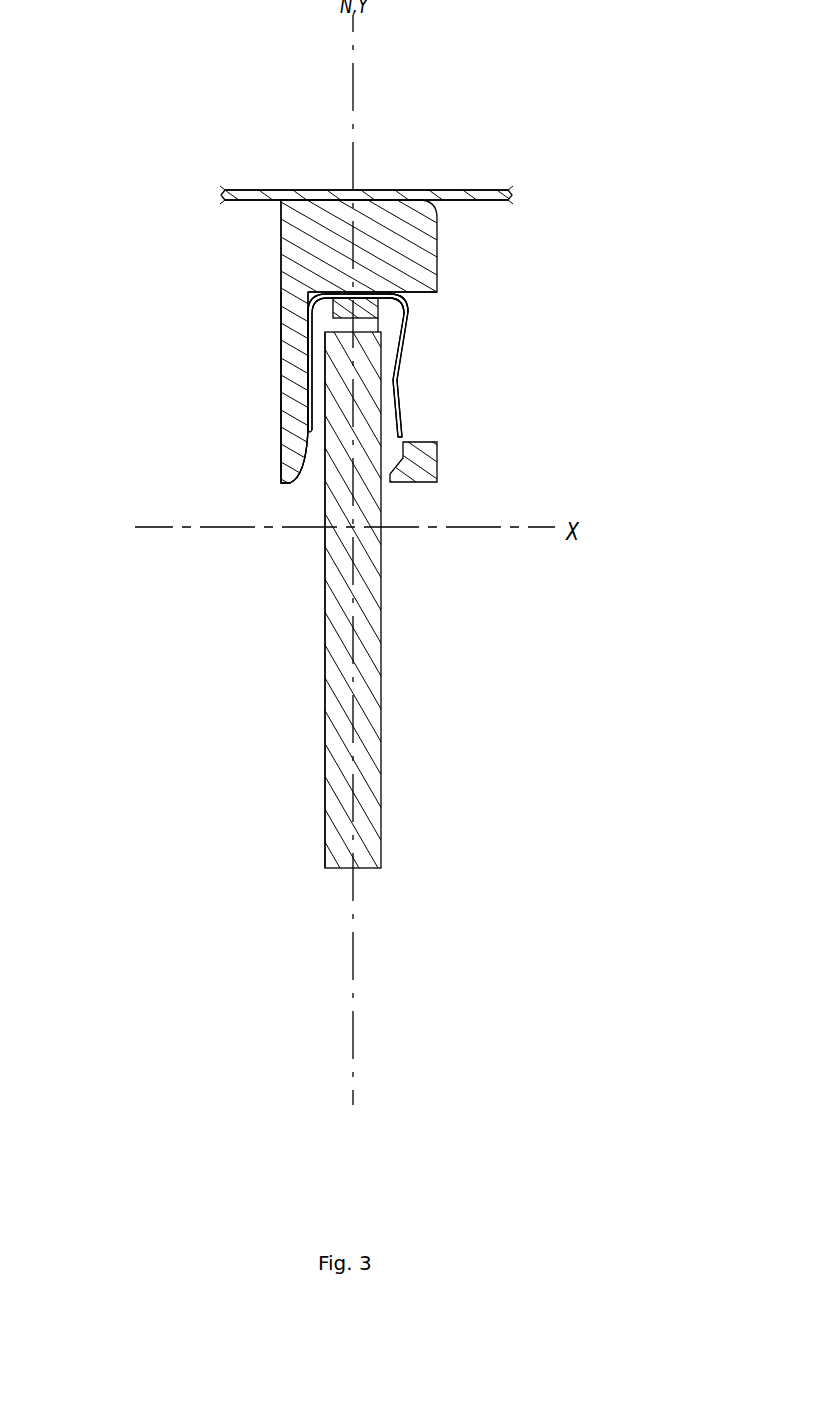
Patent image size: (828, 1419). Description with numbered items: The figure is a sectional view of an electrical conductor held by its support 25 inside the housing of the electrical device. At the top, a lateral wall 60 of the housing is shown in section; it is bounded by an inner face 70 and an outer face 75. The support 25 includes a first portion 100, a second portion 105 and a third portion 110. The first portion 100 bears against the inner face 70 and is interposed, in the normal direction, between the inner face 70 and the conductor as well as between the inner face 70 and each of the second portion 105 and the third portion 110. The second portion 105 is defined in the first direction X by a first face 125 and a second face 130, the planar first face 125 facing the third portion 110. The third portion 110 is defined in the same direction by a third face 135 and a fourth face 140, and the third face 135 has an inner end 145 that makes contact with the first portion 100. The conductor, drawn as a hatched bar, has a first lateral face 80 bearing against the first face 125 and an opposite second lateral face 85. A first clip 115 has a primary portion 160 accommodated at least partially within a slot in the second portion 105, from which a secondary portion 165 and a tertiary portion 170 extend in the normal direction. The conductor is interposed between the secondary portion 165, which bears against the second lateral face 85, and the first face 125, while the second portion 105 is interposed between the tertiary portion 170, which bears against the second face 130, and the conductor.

The support 25 is at (288, 235).
The lateral wall 60 is at (475, 200).
The inner face 70 is at (490, 205).
The outer face 75 is at (457, 188).
The first lateral face 80 is at (380, 775).
The second lateral face 85 is at (326, 775).
The first portion 100 is at (307, 235).
The second portion 105 is at (423, 484).
The third portion 110 is at (292, 458).
The first clip 115 is at (312, 385).
The first face 125 is at (367, 322).
The second face 130 is at (406, 437).
The third face 135 is at (309, 392).
The fourth face 140 is at (277, 420).
The inner end 145 is at (313, 287).
The primary portion 160 is at (400, 293).
The secondary portion 165 is at (312, 320).
The tertiary portion 170 is at (402, 410).